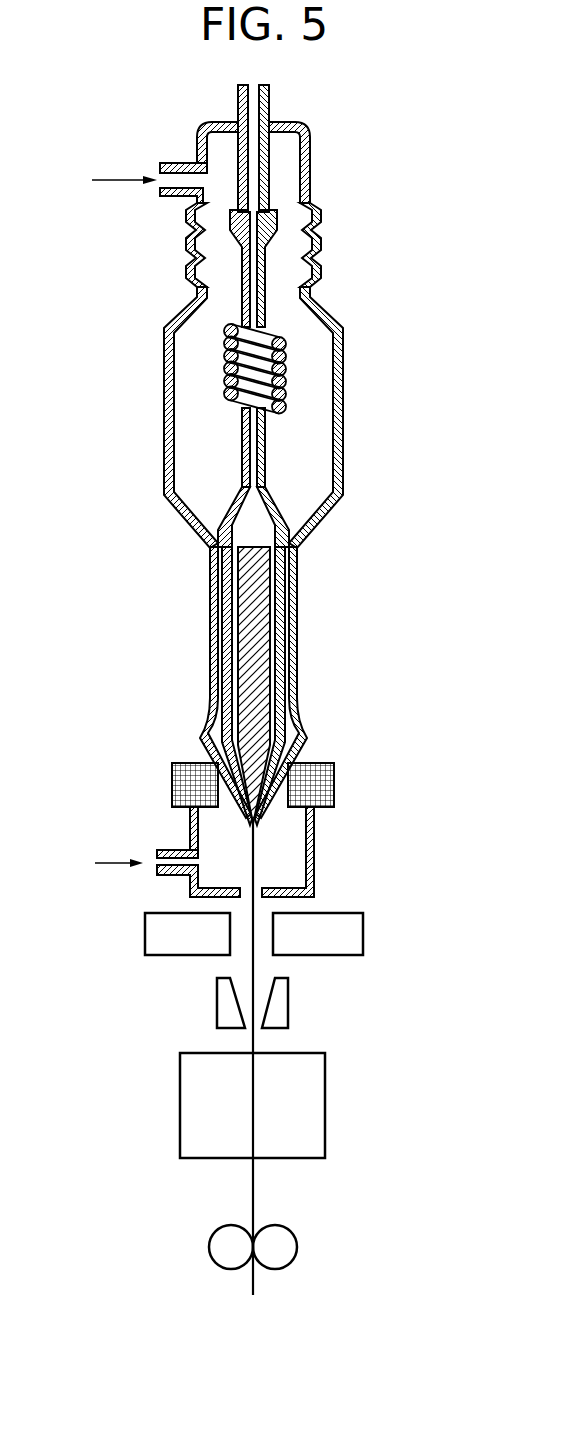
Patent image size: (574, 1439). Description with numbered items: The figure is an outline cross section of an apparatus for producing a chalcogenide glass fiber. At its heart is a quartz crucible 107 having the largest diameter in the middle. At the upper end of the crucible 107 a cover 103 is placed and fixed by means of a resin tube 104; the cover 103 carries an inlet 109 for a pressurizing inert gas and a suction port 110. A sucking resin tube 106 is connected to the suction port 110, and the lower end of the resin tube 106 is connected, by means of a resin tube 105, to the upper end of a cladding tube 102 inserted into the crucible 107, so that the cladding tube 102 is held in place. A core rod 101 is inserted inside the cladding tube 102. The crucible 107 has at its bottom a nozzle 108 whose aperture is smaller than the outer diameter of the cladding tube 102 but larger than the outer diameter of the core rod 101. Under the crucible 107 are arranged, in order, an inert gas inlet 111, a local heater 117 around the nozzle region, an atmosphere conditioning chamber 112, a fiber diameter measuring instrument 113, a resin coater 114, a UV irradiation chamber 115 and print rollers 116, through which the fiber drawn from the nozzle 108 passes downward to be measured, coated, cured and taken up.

The core rod 101 is at (260, 543).
The cladding tube 102 is at (291, 596).
The cover 103 is at (311, 160).
The resin tube 104 is at (321, 238).
The resin tube 105 is at (217, 527).
The sucking resin tube 106 is at (247, 457).
The crucible 107 is at (299, 663).
The nozzle 108 is at (273, 798).
The inlet for inert gas 109 is at (167, 165).
The suction port 110 is at (269, 93).
The inlet for inert gas 111 is at (172, 852).
The atmosphere conditioning chamber 112 is at (315, 873).
The fiber diameter measuring instrument 113 is at (363, 943).
The resin coater 114 is at (289, 1012).
The UV irradiation chamber 115 is at (326, 1115).
The print rollers 116 is at (298, 1247).
The local heater 117 is at (335, 776).